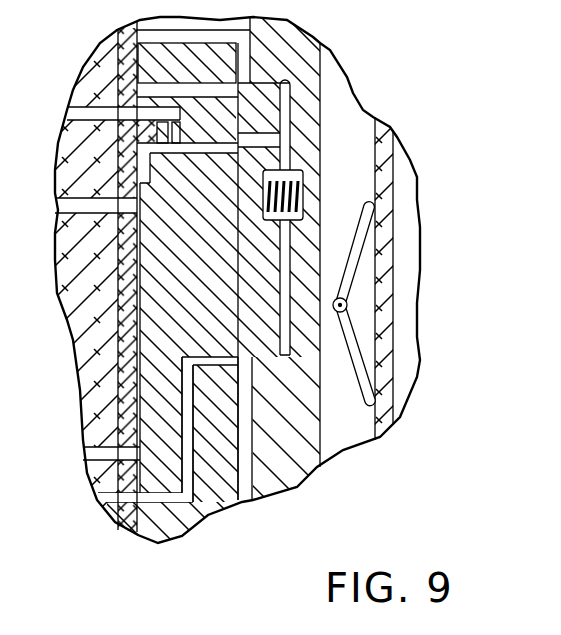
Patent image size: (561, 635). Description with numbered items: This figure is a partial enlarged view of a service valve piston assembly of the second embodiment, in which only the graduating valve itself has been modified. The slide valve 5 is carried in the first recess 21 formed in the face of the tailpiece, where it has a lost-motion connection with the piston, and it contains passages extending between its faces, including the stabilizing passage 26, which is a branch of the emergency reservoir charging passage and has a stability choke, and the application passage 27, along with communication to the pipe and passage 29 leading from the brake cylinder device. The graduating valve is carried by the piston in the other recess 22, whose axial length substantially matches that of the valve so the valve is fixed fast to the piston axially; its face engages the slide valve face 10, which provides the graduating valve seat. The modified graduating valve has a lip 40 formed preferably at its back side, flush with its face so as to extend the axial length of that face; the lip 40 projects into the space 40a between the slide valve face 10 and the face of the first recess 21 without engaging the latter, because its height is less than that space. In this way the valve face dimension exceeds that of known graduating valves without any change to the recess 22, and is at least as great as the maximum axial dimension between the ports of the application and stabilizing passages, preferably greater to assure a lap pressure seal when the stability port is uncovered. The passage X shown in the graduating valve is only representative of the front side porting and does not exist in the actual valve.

The stabilizing passage 26 is at (92, 111).
The passage X is at (268, 142).
The recess 22 is at (286, 263).
The first recess 21 is at (255, 451).
The space 40a is at (250, 500).
The slide valve 5 is at (146, 247).
The slide valve face 10 is at (140, 312).
The lip 40 is at (240, 374).
The application passage 27 is at (187, 435).
The pipe and passage 29 is at (110, 500).